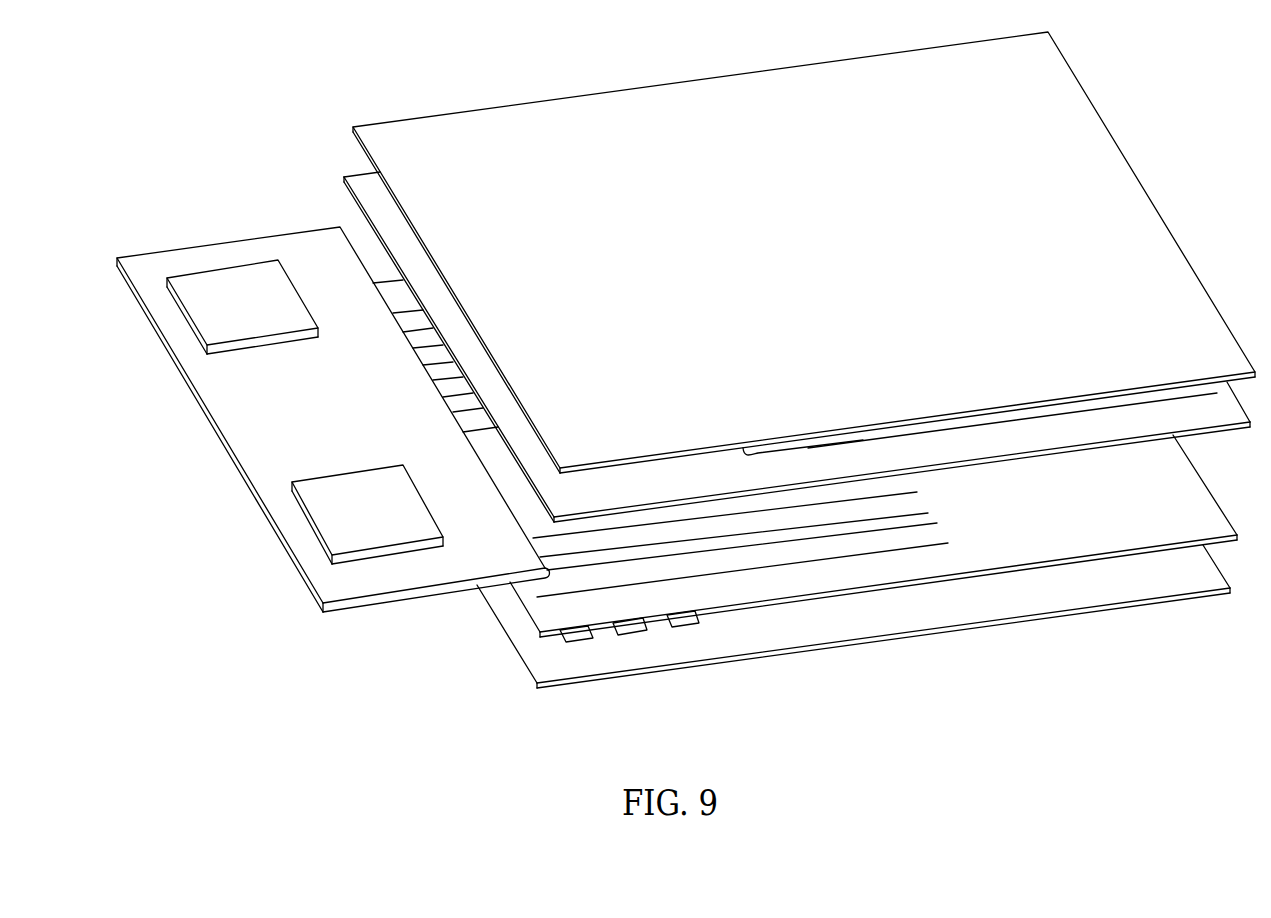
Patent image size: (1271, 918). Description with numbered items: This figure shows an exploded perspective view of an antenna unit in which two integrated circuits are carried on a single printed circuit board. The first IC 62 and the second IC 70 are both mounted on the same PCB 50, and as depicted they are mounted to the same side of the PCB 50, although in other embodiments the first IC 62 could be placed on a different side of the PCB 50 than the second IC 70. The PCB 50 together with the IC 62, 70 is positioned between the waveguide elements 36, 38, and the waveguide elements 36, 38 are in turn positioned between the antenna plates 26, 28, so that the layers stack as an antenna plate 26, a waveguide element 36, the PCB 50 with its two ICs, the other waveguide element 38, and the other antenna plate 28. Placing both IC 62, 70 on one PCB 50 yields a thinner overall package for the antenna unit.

The antenna plate 26 is at (447, 138).
The waveguide element 36 is at (1084, 466).
The waveguide element 38 is at (800, 618).
The antenna plate 28 is at (885, 615).
The PCB 50 is at (252, 435).
The first IC 62 is at (233, 288).
The second IC 70 is at (375, 525).